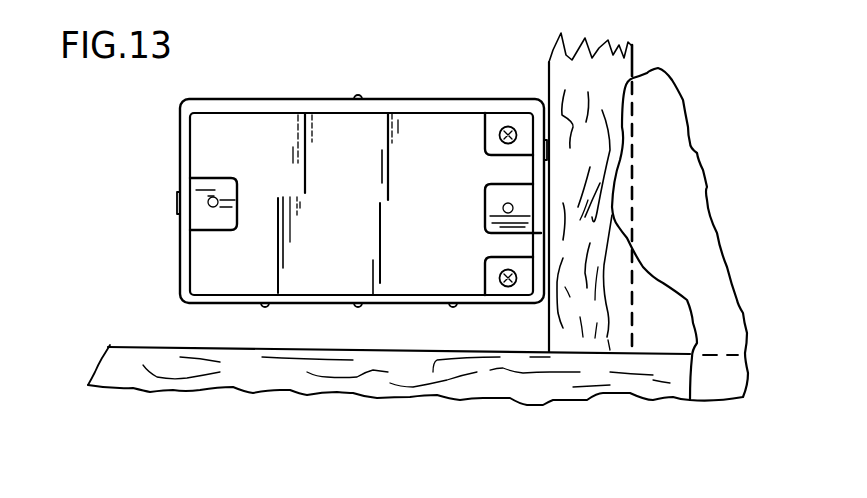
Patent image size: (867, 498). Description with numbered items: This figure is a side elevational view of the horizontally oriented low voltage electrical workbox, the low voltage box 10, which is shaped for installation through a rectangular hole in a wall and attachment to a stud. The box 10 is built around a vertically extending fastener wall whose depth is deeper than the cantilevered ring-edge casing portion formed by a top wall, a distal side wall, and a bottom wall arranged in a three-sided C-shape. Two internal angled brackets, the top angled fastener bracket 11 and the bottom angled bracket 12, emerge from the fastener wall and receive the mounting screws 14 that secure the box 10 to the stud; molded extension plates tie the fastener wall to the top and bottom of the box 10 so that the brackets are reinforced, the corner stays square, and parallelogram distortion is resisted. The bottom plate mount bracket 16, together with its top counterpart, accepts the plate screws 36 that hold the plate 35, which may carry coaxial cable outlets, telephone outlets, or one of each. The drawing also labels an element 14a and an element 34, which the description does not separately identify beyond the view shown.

The low voltage box 10 is at (274, 82).
The mounting screws 14 is at (362, 72).
The side mounting tab 14a is at (240, 198).
The top angled fastener bracket 11 is at (485, 134).
The bottom plate mount bracket 16 is at (486, 203).
The bottom angled bracket 12 is at (486, 270).
The wall stud / post 34 is at (557, 70).
The plate screws 36 is at (697, 183).
The plate 35 is at (100, 362).